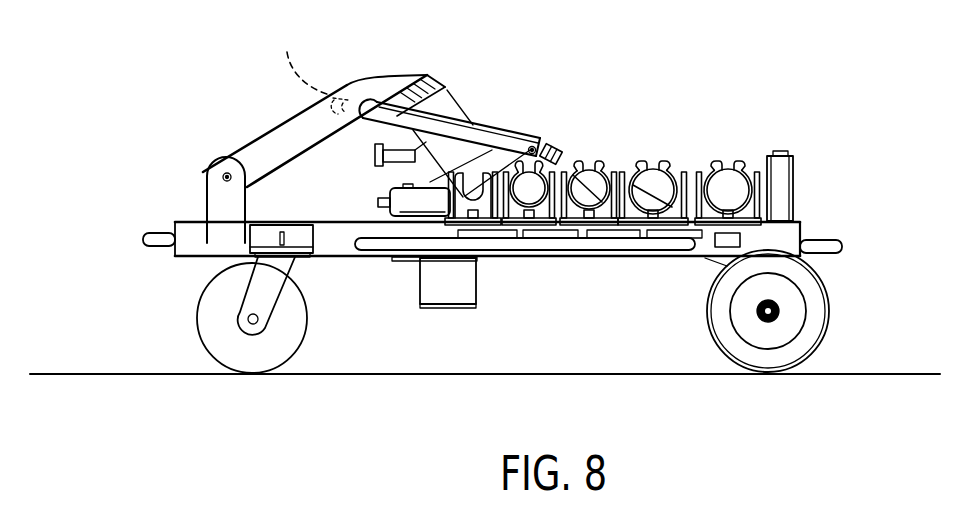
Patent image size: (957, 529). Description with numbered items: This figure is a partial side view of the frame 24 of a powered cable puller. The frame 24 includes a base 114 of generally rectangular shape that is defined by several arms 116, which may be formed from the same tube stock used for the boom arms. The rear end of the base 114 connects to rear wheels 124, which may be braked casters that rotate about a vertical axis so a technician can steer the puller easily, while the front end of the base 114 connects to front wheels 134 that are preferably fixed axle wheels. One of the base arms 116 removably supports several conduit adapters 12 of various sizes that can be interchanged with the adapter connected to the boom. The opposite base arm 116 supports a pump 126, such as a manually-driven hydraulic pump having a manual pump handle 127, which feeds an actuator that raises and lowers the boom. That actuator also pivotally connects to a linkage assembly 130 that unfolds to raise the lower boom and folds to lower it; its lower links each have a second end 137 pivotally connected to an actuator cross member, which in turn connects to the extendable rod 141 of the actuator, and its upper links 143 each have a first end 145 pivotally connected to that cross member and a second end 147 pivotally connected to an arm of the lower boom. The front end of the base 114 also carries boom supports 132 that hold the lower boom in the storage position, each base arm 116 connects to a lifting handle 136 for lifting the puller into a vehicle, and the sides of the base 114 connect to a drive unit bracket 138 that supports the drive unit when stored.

The conduit adapter 12 is at (619, 151).
The frame 24 is at (499, 200).
The base 114 is at (338, 247).
The arms 116 is at (705, 248).
The rear wheels 124 is at (208, 322).
The pump 126 is at (377, 202).
The manual pump handle 127 is at (376, 160).
The linkage assembly 130 is at (520, 120).
The boom supports 132 is at (793, 167).
The front wheels 134 is at (797, 348).
The lifting handle 136 is at (162, 246).
The second end 137 is at (611, 120).
The drive unit bracket 138 is at (447, 307).
The extendable rod 141 is at (598, 160).
The upper links 143 is at (367, 112).
The first end 145 is at (547, 150).
The second end 147 is at (309, 70).